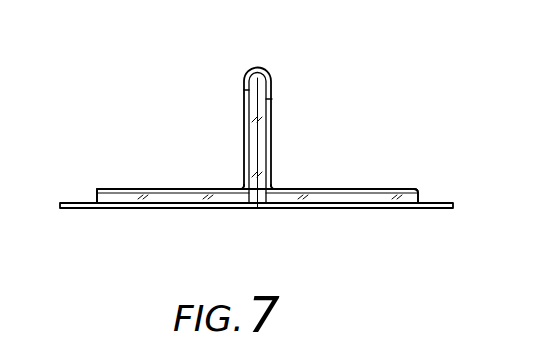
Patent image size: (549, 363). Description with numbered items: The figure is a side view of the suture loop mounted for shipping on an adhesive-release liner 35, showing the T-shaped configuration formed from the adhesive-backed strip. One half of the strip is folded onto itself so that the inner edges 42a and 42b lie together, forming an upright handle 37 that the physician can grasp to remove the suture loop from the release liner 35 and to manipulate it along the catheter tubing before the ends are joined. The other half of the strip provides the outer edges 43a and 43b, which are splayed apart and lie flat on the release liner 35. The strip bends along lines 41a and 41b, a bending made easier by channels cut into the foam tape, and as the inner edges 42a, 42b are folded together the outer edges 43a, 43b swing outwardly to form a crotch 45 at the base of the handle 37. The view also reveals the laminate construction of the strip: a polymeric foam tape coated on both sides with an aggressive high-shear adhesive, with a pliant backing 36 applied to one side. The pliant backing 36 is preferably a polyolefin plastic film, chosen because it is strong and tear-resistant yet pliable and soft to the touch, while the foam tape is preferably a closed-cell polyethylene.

The adhesive-release liner 35 is at (444, 208).
The pliant backing 36 is at (369, 191).
The handle 37 is at (259, 67).
The bending line 41a is at (242, 190).
The bending line 41b is at (272, 188).
The inner edge 42a is at (244, 90).
The inner edge 42b is at (267, 99).
The outer edge 43a is at (118, 206).
The outer edge 43b is at (390, 207).
The crotch 45 is at (258, 207).